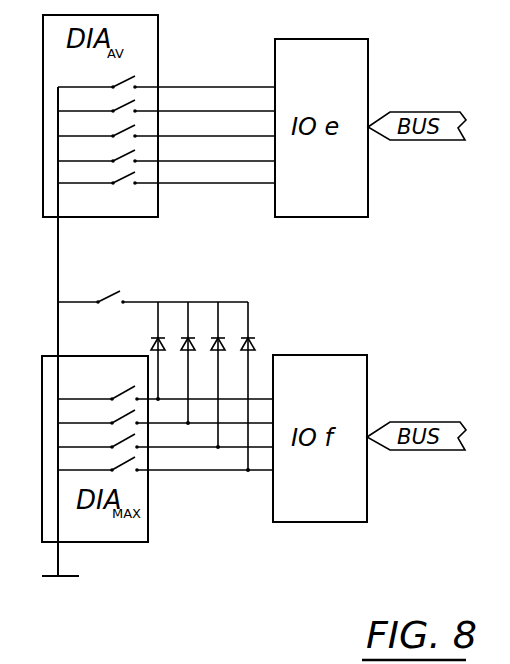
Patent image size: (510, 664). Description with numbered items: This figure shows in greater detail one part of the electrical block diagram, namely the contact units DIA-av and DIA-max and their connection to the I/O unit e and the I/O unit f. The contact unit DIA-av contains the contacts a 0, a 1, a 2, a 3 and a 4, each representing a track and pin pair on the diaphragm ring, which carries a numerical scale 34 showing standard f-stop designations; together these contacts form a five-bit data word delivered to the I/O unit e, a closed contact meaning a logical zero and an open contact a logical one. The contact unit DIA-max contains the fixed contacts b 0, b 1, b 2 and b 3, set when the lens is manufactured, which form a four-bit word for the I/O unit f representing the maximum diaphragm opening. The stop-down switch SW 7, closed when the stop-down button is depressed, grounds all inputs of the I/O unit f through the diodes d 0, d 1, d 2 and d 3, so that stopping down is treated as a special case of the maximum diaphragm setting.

The contact a0, contact b0 and diode d0 0 is at (166, 235).
The contact a1, contact b1 and diode d1 1 is at (166, 259).
The contact a2, contact b2 and diode d2 2 is at (166, 284).
The contact a3, contact b3 and diode d3 3 is at (166, 308).
The contact a4 4 is at (166, 175).
The stop-down switch SW7 7 is at (109, 296).
The numerical scale 34 is at (127, 654).